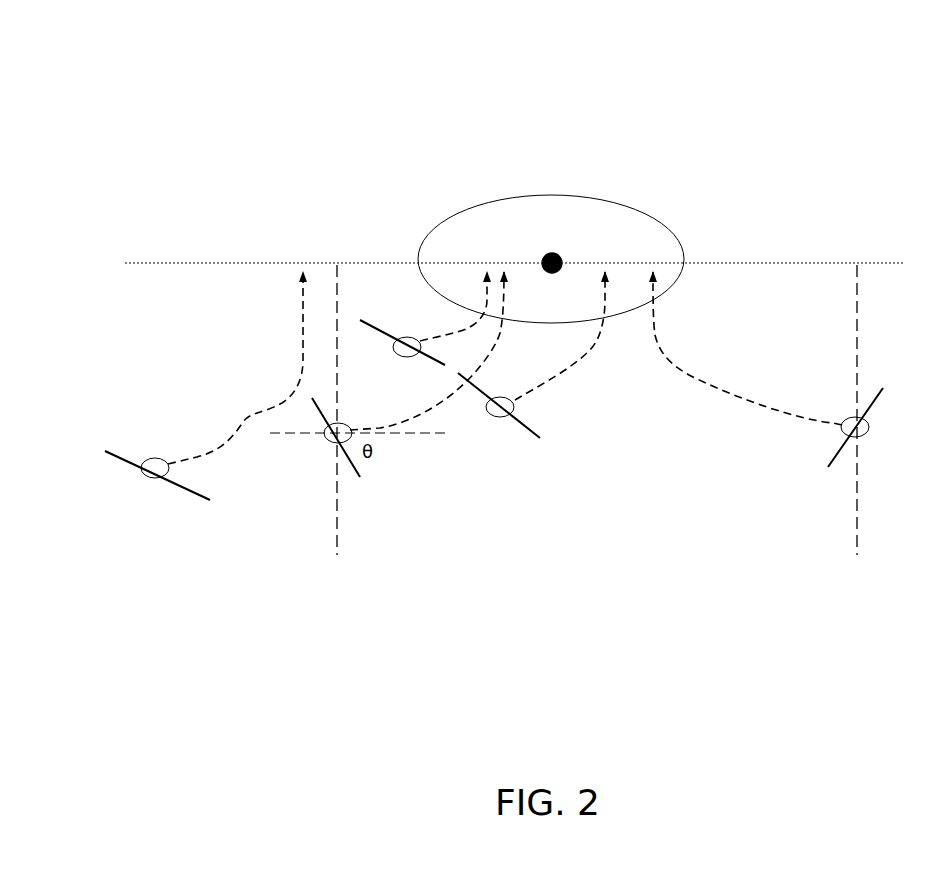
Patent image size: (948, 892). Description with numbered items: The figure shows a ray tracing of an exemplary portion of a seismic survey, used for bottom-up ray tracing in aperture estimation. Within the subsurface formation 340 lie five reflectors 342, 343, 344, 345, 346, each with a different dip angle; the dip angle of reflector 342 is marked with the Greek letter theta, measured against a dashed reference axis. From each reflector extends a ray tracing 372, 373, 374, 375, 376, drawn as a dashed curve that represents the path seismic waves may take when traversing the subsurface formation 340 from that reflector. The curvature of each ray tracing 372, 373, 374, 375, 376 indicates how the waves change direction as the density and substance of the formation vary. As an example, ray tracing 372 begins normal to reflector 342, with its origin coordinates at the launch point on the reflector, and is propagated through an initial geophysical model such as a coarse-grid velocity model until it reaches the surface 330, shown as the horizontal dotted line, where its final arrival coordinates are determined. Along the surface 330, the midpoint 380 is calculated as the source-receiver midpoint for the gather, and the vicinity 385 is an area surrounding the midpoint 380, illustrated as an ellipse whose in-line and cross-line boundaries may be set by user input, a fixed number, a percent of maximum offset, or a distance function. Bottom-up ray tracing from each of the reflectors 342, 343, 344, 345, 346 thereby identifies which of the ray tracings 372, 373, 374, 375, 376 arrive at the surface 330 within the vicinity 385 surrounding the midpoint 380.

The surface 330 is at (749, 256).
The subsurface formation 340 is at (660, 497).
The reflector 342 is at (353, 477).
The reflector 343 is at (846, 457).
The reflector 344 is at (201, 515).
The reflector 345 is at (448, 354).
The reflector 346 is at (527, 440).
The ray tracing 372 is at (367, 413).
The ray tracing 373 is at (779, 392).
The ray tracing 374 is at (295, 360).
The ray tracing 375 is at (442, 328).
The ray tracing 376 is at (550, 360).
The midpoint 380 is at (561, 240).
The vicinity 385 is at (646, 198).